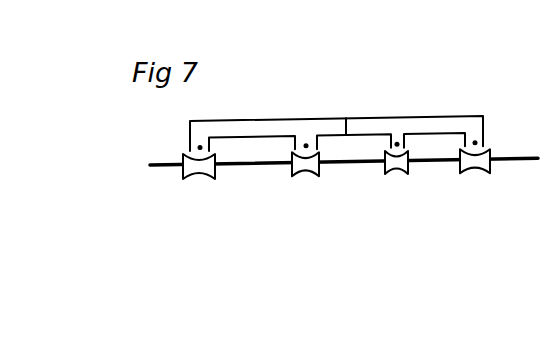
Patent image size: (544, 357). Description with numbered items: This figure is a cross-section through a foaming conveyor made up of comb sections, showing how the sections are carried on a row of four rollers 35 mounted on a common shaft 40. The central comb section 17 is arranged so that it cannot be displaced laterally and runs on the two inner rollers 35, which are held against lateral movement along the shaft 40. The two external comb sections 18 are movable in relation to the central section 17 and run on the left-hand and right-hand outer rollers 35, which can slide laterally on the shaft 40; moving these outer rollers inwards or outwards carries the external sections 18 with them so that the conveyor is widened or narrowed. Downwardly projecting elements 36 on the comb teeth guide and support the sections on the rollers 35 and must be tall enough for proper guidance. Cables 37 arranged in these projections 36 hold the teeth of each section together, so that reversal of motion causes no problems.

The central comb section 17 is at (320, 128).
The external comb section 18 is at (245, 128).
The roller 35 is at (488, 172).
The downwardly projecting element 36 is at (398, 152).
The cable 37 is at (197, 148).
The shaft 40 is at (508, 159).